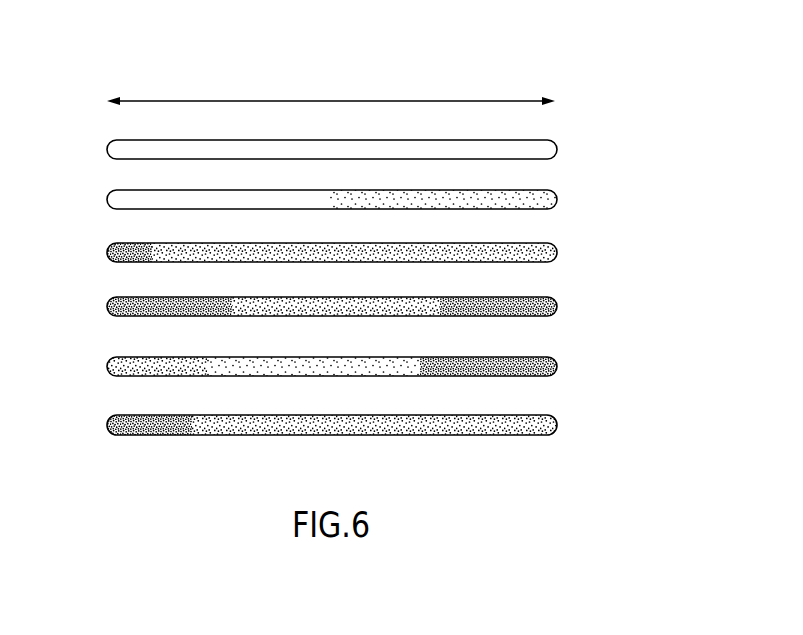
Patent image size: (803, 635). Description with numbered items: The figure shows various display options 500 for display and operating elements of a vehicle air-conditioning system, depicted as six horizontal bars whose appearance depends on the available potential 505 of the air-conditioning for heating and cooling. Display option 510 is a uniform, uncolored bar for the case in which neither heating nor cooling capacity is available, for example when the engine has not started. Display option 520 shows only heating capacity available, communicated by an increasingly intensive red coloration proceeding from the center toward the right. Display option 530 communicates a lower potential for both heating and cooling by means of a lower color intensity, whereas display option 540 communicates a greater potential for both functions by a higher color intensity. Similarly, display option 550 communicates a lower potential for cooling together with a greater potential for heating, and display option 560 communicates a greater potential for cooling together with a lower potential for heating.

The display options 500 is at (588, 36).
The available potential 505 is at (331, 89).
The display option 510 is at (127, 150).
The display option 520 is at (127, 200).
The display option 530 is at (127, 253).
The display option 540 is at (127, 307).
The display option 550 is at (127, 367).
The display option 560 is at (127, 426).